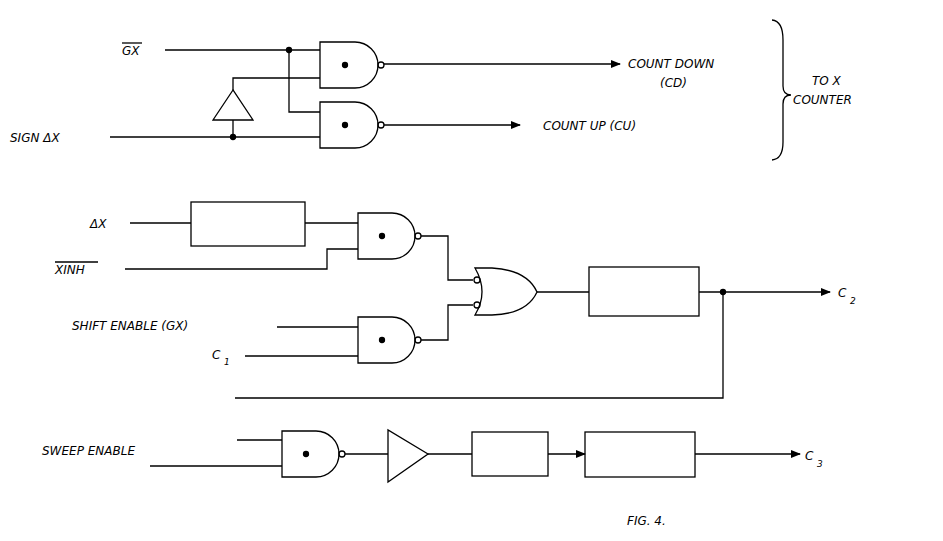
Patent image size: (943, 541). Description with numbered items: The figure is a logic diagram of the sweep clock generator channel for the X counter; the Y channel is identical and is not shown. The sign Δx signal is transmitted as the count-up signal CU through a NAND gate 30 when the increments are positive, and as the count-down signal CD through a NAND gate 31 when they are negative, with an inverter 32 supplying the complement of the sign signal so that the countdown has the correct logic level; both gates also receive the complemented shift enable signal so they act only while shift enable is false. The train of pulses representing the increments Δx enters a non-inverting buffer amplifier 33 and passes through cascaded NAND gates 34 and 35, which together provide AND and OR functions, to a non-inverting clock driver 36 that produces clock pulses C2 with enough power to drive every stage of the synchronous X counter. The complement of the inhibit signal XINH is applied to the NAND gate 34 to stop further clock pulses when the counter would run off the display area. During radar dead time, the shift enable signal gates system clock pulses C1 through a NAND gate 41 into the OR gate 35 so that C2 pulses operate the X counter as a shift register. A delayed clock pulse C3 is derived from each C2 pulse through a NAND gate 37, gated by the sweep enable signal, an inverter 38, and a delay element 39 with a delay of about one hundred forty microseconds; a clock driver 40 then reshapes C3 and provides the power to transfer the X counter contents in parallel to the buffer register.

The NAND gate 30 is at (372, 103).
The NAND gate 31 is at (365, 42).
The inverter 32 is at (214, 100).
The buffer amplifier 33 is at (305, 203).
The NAND gate 34 is at (405, 214).
The NAND gate 35 is at (515, 278).
The clock driver 36 is at (680, 268).
The NAND gate 37 is at (311, 468).
The inverter 38 is at (410, 465).
The delay element 39 is at (507, 468).
The clock driver 40 is at (697, 434).
The NAND gate 41 is at (405, 305).